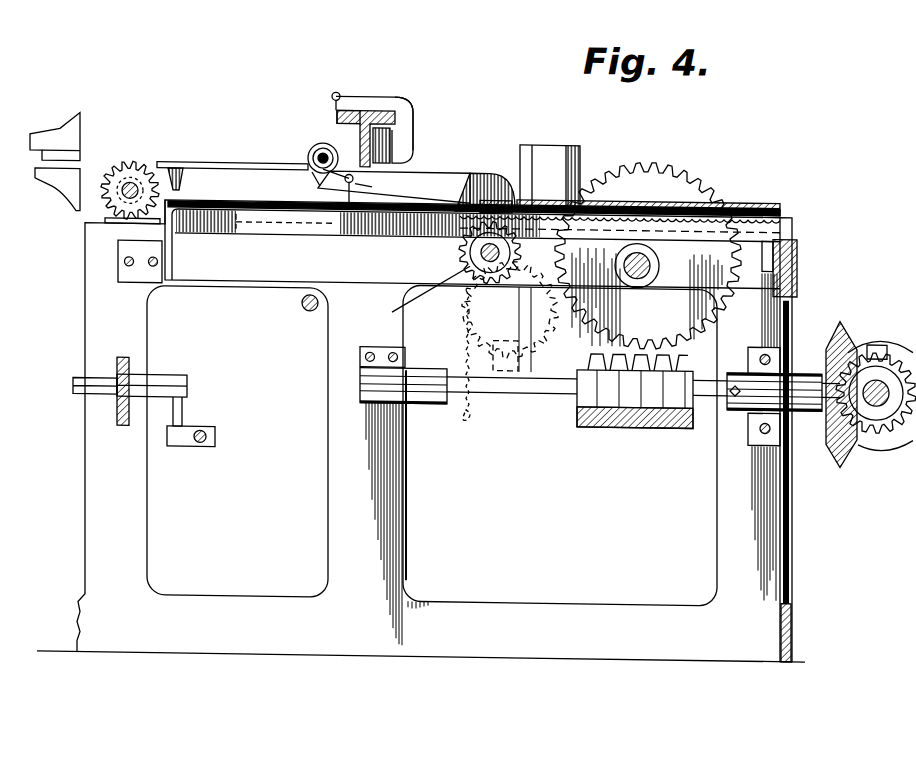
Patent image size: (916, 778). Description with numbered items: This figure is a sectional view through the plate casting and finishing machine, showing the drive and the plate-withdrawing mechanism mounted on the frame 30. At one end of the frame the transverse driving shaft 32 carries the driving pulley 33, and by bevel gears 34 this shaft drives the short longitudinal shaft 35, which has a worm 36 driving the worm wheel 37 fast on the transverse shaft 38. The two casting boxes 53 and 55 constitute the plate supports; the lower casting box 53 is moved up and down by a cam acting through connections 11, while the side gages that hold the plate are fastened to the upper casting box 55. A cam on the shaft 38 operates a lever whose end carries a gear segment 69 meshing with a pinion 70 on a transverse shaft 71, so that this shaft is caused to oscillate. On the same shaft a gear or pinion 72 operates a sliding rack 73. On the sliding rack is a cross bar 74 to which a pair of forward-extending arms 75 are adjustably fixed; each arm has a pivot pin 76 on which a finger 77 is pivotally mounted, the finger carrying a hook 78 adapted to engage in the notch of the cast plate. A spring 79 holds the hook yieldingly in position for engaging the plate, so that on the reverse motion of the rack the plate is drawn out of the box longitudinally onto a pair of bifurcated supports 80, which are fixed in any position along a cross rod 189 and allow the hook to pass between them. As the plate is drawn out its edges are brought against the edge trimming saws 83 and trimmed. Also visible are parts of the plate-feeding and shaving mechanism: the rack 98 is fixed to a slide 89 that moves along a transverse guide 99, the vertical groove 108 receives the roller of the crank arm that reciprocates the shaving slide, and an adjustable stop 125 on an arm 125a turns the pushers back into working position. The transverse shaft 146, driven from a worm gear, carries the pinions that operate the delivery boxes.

The connections 11 is at (202, 423).
The frame 30 is at (718, 563).
The transverse driving shaft 32 is at (876, 390).
The driving pulley 33 is at (878, 331).
The bevel gears 34 is at (855, 428).
The short longitudinal shaft 35 is at (510, 388).
The worm 36 is at (632, 418).
The worm wheel 37 is at (655, 162).
The transverse shaft 38 is at (650, 269).
The lower casting box 53 is at (60, 184).
The upper casting box 55 is at (64, 142).
The gear segment 69 is at (465, 352).
The pinion 70 is at (478, 286).
The transverse shaft 71 is at (418, 302).
The gear or pinion 72 is at (470, 249).
The sliding rack 73 is at (722, 200).
The cross bar 74 is at (484, 166).
The arms 75 is at (424, 170).
The pivot pin 76 is at (362, 182).
The finger 77 is at (320, 172).
The hook 78 is at (312, 156).
The spring 79 is at (349, 186).
The supports 80 is at (189, 161).
The edge trimming saws 83 is at (126, 161).
The slide 89 is at (375, 106).
The rack 98 is at (348, 126).
The transverse guide 99 is at (388, 131).
The vertical groove 108 is at (560, 152).
The adjustable stop 125 is at (342, 82).
The arm 125a is at (412, 103).
The transverse shaft 146 is at (305, 306).
The cross rod 189 is at (312, 144).